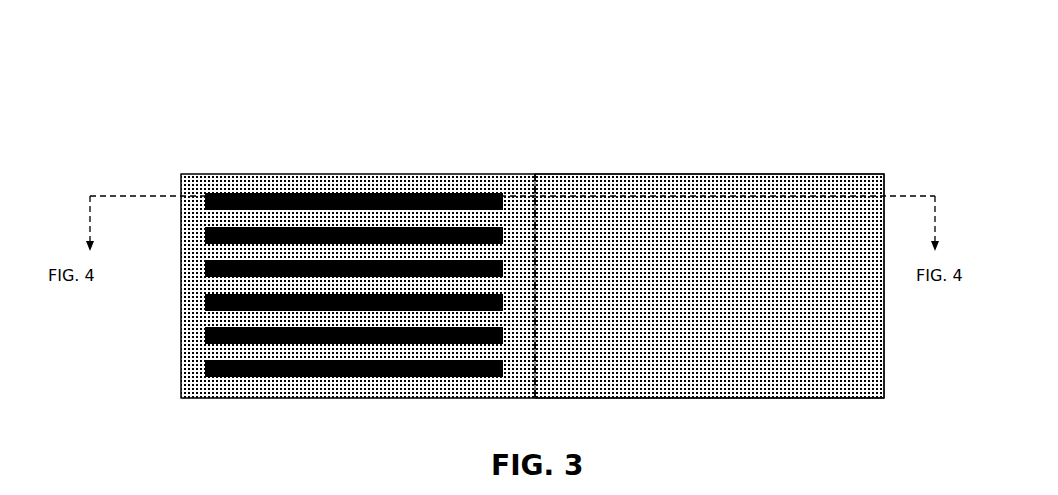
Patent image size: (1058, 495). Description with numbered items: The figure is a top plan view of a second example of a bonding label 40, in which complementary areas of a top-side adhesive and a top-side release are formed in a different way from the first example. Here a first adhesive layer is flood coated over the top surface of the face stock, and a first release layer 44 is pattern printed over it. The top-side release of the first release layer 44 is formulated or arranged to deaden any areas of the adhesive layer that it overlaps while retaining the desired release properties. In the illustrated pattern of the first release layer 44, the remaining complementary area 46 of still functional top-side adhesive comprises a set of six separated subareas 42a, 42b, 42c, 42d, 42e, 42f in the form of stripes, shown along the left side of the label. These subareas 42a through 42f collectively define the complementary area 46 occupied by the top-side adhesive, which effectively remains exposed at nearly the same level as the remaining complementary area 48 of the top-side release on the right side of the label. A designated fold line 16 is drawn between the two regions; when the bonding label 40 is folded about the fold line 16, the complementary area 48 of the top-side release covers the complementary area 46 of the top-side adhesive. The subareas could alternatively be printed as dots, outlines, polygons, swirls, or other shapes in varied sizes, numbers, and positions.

The bonding label 40 is at (560, 122).
The fold line 16 is at (524, 183).
The first release layer 44 is at (752, 204).
The complementary area of top-side adhesive 46 is at (351, 177).
The complementary area of top-side release 48 is at (710, 160).
The subarea of top-side adhesive 42a is at (197, 195).
The subarea of top-side adhesive 42b is at (197, 229).
The subarea of top-side adhesive 42c is at (197, 262).
The subarea of top-side adhesive 42d is at (197, 296).
The subarea of top-side adhesive 42e is at (197, 329).
The subarea of top-side adhesive 42f is at (197, 362).